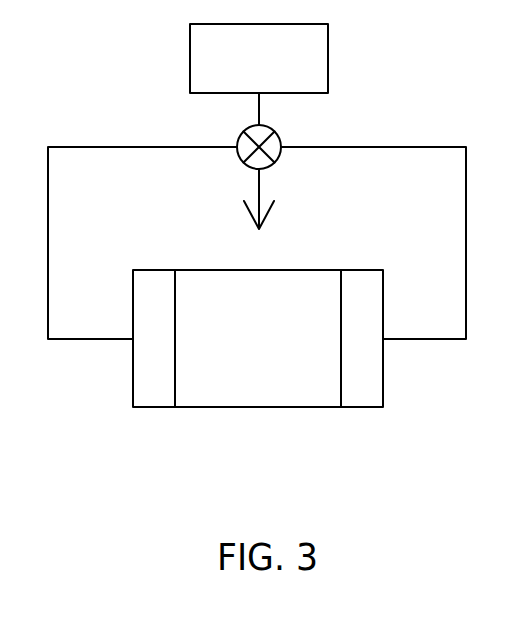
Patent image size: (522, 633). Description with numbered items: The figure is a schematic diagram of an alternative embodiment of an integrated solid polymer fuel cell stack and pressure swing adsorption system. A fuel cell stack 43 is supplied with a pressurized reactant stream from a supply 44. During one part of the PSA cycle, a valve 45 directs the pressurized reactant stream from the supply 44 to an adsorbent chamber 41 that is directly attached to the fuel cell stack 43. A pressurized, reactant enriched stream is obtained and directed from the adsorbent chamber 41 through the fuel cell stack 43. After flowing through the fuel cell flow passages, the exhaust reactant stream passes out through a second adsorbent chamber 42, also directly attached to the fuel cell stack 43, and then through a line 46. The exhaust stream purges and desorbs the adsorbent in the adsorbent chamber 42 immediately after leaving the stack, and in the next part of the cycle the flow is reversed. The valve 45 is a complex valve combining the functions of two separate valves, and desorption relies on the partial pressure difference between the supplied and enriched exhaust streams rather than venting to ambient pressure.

The adsorbent chamber 41 is at (155, 381).
The adsorbent chamber 42 is at (363, 381).
The fuel cell stack 43 is at (238, 381).
The supply 44 is at (305, 58).
The valve 45 is at (282, 140).
The line 46 is at (260, 180).